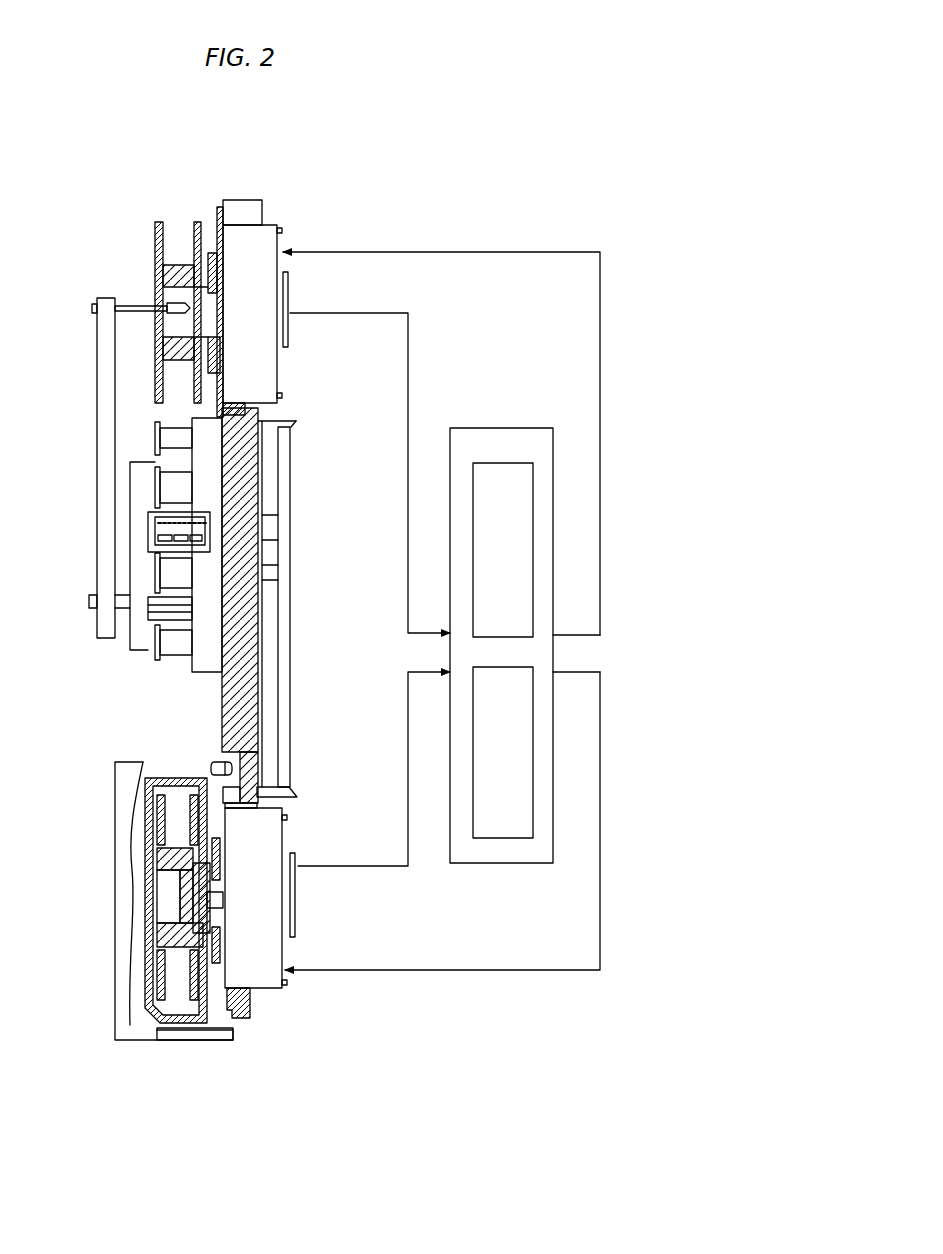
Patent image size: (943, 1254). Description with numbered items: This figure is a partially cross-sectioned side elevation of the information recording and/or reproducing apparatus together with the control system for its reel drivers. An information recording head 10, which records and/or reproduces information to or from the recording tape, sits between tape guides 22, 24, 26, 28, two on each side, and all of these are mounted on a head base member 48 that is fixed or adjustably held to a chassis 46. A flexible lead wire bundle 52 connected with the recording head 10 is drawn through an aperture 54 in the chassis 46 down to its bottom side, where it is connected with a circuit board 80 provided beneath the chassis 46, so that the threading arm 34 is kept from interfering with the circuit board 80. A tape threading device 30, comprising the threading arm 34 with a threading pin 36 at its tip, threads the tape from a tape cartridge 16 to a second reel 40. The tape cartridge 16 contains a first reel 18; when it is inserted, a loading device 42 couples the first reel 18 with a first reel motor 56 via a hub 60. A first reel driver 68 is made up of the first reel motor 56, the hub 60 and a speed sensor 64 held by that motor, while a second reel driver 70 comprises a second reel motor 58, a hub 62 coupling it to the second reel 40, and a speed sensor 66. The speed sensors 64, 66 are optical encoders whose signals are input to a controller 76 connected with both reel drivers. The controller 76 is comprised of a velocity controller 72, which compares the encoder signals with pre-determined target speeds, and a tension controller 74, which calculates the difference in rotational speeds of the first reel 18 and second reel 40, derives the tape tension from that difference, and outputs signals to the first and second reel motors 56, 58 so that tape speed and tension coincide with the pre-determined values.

The information recording head 10 is at (253, 517).
The tape cartridge 16 is at (148, 1023).
The first reel 18 is at (190, 800).
The tape guide 22 is at (187, 572).
The tape guide 24 is at (187, 640).
The tape guide 26 is at (183, 488).
The tape guide 28 is at (188, 443).
The tape threading device 30 is at (140, 648).
The threading arm 34 is at (99, 449).
The threading pin 36 is at (138, 308).
The second reel 40 is at (155, 240).
The loading device 42 is at (232, 770).
The chassis 46 is at (243, 708).
The head base member 48 is at (215, 663).
The flexible lead wire bundle 52 is at (273, 533).
The aperture 54 is at (210, 528).
The first reel motor 56 is at (273, 947).
The second reel motor 58 is at (270, 361).
The hub 60 is at (218, 885).
The hub 62 is at (218, 297).
The speed sensor 64 is at (297, 862).
The speed sensor 66 is at (287, 273).
The first reel driver 68 is at (212, 1022).
The second reel driver 70 is at (208, 218).
The velocity controller 72 is at (523, 463).
The tension controller 74 is at (513, 838).
The controller 76 is at (493, 428).
The circuit board 80 is at (287, 442).